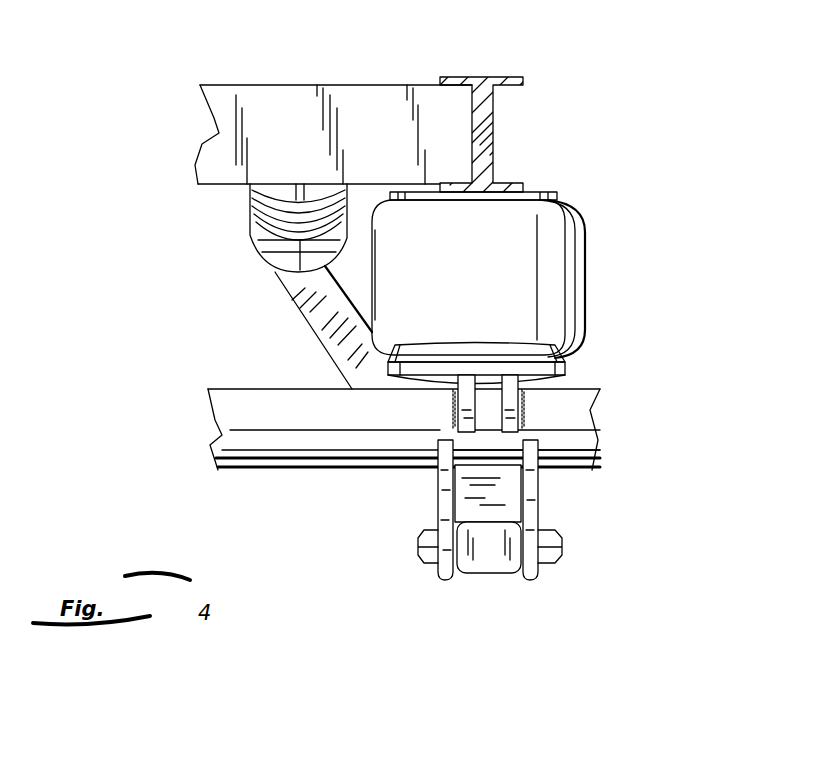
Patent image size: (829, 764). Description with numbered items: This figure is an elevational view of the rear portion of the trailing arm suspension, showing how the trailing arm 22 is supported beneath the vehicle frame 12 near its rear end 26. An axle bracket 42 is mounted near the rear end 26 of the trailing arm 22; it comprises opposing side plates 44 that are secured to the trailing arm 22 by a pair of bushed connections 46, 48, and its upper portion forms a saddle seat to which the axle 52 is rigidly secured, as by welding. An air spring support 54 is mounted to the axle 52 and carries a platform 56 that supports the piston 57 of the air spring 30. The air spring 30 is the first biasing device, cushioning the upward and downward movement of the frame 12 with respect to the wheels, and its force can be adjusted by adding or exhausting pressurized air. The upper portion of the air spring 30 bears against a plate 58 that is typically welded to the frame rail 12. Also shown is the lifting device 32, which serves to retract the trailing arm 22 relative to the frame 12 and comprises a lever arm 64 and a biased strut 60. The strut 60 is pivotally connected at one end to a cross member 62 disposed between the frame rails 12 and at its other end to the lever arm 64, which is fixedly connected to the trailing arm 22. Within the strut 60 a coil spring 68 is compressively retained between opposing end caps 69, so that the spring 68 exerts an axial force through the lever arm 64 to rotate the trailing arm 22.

The frame 12 is at (467, 76).
The trailing arm 22 is at (505, 496).
The rear end 26 is at (488, 578).
The air spring 30 is at (592, 262).
The lifting device 32 is at (246, 277).
The axle bracket 42 is at (546, 596).
The side plates 44 is at (440, 582).
The bushed connection 46 is at (560, 471).
The bushed connection 48 is at (420, 558).
The axle 52 is at (265, 400).
The air spring support 54 is at (524, 402).
The platform 56 is at (445, 378).
The piston 57 is at (458, 356).
The plate 58 is at (528, 193).
The strut 60 is at (240, 190).
The cross member 62 is at (380, 100).
The lever arm 64 is at (300, 307).
The coil spring 68 is at (265, 207).
The end caps 69 is at (300, 192).